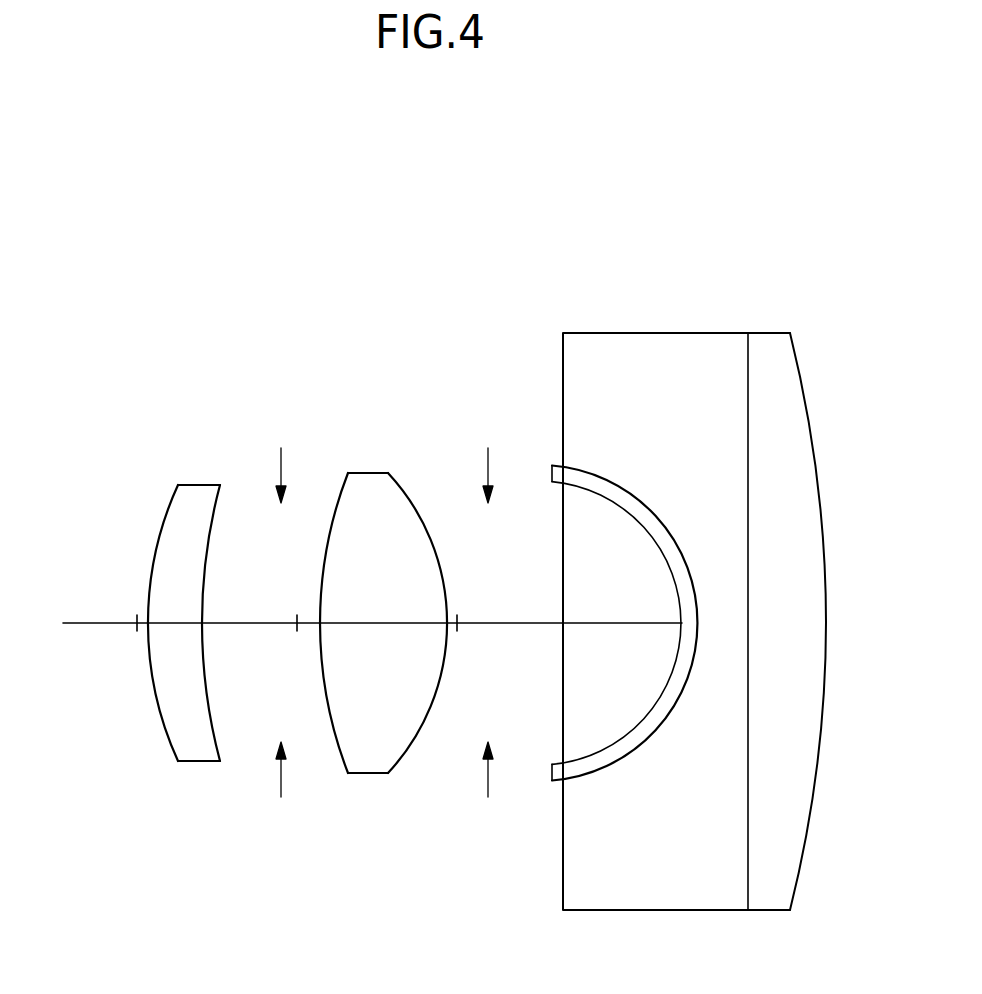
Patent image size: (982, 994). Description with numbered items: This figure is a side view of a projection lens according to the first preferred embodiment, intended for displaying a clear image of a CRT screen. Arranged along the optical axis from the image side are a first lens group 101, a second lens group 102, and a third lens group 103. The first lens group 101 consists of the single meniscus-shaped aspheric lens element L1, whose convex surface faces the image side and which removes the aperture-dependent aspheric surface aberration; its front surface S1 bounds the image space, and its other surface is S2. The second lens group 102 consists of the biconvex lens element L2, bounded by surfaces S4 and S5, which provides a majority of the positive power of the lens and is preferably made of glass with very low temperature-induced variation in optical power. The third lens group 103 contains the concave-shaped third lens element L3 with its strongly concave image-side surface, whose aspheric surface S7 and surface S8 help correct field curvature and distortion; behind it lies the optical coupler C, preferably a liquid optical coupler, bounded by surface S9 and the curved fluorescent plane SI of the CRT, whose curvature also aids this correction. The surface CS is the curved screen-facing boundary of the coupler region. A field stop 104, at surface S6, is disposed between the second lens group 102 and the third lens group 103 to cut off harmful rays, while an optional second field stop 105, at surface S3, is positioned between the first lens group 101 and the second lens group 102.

The first lens group 101 is at (168, 653).
The second lens group 102 is at (371, 656).
The third lens group 103 is at (714, 620).
The field stop 104 is at (489, 791).
The second field stop 105 is at (281, 791).
The first lens element L1 is at (168, 583).
The biconvex lens element L2 is at (371, 592).
The third lens element L3 is at (600, 596).
The front surface S1 is at (152, 582).
The lens surface S2 is at (204, 577).
The lens surface S3 is at (283, 462).
The lens surface S4 is at (321, 591).
The lens surface S5 is at (443, 563).
The lens surface S6 is at (487, 462).
The aspheric surface S7 is at (651, 537).
The lens surface S8 is at (613, 481).
The lens surface S9 is at (748, 481).
The optical coupler C is at (718, 578).
The curved surface of cover glass CS is at (803, 386).
The fluorescent plane SI is at (832, 618).